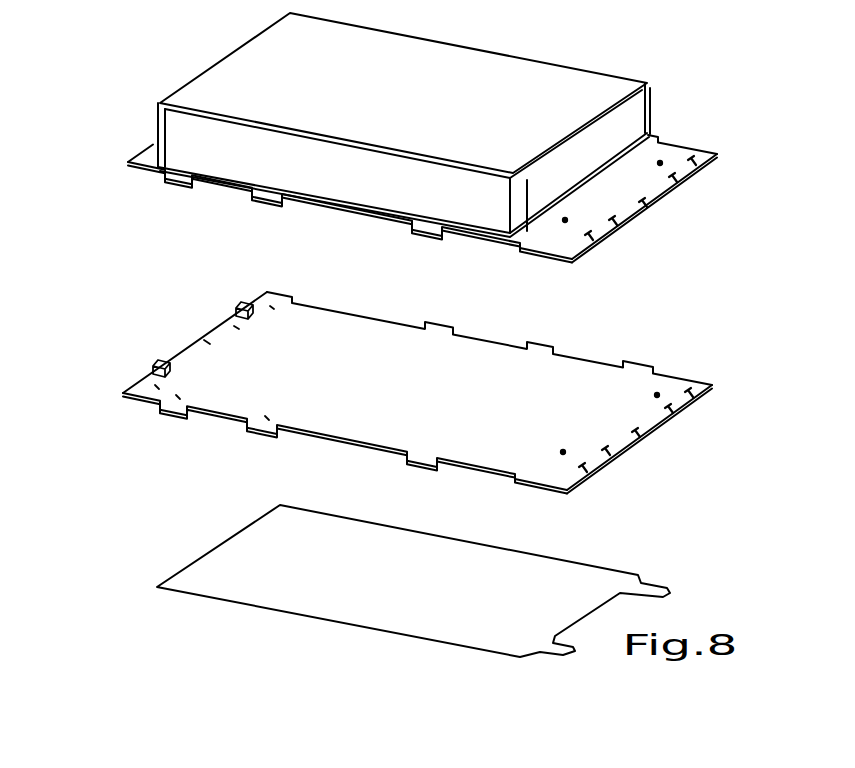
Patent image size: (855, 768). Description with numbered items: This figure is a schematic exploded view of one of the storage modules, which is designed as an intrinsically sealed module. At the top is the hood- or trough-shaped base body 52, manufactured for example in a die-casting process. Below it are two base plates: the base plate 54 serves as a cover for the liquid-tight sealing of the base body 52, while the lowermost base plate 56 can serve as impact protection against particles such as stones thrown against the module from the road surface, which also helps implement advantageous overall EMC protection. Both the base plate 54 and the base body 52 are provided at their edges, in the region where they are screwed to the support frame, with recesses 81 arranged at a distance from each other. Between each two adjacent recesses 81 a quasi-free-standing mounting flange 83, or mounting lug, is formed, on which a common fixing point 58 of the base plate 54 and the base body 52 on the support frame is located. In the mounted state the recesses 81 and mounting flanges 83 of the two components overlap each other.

The base body 52 is at (590, 88).
The base plate 54 is at (605, 378).
The base plate 56 is at (590, 576).
The common fixing point 58 is at (168, 386).
The recesses 81 is at (133, 186).
The mounting flange 83 is at (165, 199).